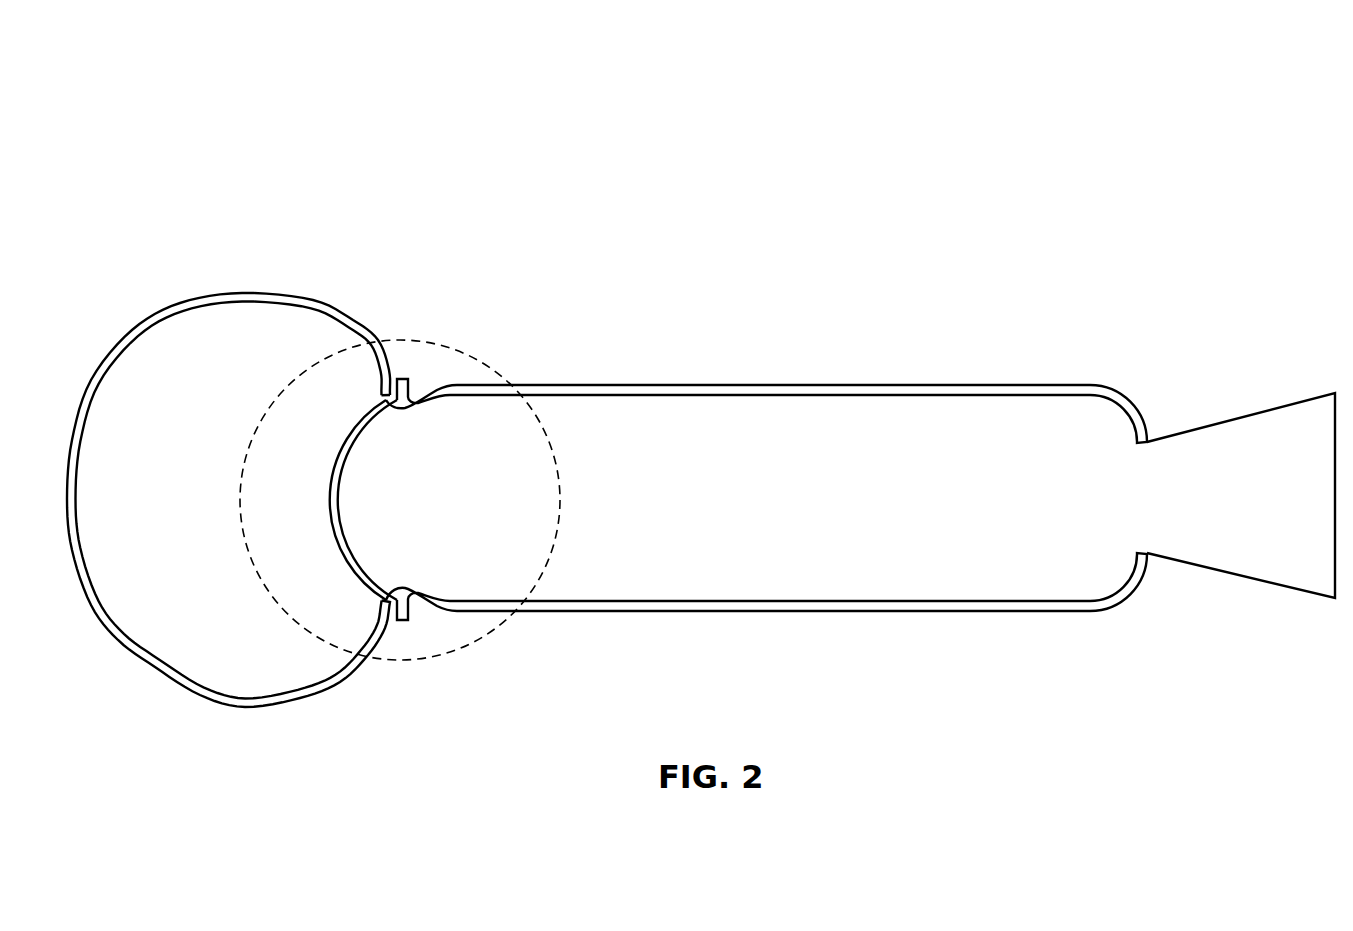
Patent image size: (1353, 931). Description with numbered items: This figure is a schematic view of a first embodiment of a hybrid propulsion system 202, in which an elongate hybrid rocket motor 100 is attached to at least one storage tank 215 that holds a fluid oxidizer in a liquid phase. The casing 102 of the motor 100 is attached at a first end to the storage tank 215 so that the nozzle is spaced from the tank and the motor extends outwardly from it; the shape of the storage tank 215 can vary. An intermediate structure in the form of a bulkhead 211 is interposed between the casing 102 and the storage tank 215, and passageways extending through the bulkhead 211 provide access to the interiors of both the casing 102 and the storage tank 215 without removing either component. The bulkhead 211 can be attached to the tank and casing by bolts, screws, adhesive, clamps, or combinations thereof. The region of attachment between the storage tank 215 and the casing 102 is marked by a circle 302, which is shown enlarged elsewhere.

The hybrid propulsion system 202 is at (220, 163).
The storage tank 215 is at (314, 297).
The circle 302 is at (425, 340).
The bulkhead 211 is at (330, 498).
The casing 102 is at (620, 385).
The hybrid rocket motor 100 is at (975, 358).